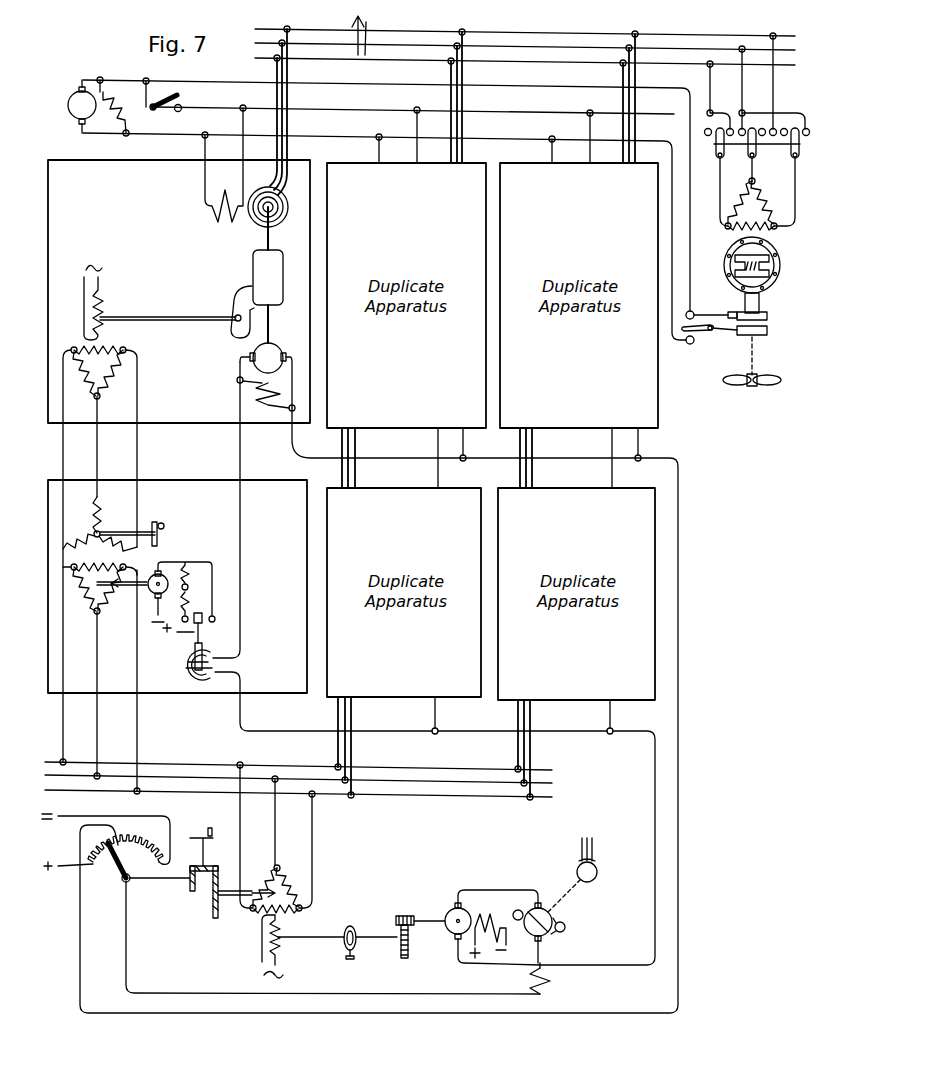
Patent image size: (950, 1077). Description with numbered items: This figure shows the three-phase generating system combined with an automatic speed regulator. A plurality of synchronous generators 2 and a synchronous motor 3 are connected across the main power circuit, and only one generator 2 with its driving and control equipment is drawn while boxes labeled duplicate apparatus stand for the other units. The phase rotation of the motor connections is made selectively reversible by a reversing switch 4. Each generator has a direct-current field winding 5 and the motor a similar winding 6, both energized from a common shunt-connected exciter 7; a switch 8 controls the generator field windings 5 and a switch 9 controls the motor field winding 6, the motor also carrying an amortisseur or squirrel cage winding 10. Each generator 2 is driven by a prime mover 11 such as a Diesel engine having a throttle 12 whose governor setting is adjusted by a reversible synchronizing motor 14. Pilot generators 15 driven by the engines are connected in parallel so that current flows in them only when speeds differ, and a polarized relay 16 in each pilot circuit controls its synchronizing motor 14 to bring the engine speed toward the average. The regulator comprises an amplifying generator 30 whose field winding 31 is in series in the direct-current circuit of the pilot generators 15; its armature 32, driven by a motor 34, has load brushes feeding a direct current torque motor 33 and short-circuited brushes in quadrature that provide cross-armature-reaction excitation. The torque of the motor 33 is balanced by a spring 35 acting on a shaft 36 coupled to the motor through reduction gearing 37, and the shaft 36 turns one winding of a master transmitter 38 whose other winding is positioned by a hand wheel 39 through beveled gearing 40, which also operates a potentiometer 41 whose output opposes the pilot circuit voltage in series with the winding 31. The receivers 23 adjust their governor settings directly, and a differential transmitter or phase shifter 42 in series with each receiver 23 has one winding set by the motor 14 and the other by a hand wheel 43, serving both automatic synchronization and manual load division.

The synchronous generator 2 is at (277, 220).
The synchronous motor 3 is at (787, 249).
The reversing switch 4 is at (800, 144).
The direct-current field winding 5 is at (221, 196).
The motor field winding 6 is at (745, 262).
The shunt-connected exciter 7 is at (82, 106).
The switch 8 is at (165, 112).
The switch 9 is at (700, 334).
The amortisseur winding 10 is at (765, 280).
The prime mover 11 is at (253, 259).
The throttle 12 is at (232, 313).
The reversible synchronizing motor 14 is at (152, 593).
The pilot generator 15 is at (232, 383).
The polarized relay 16 is at (188, 663).
The receiver 23 is at (131, 345).
The amplifying generator 30 is at (574, 957).
The field winding 31 is at (528, 979).
The armature 32 is at (528, 930).
The direct current torque motor 33 is at (452, 917).
The motor 34 is at (597, 874).
The spring 35 is at (349, 933).
The shaft 36 is at (288, 946).
The reduction gearing 37 is at (413, 926).
The master transmitter 38 is at (248, 933).
The hand wheel 39 is at (195, 844).
The beveled gearing 40 is at (204, 915).
The potentiometer 41 is at (149, 869).
The differential transmitter 42 is at (151, 567).
The hand wheel 43 is at (163, 518).